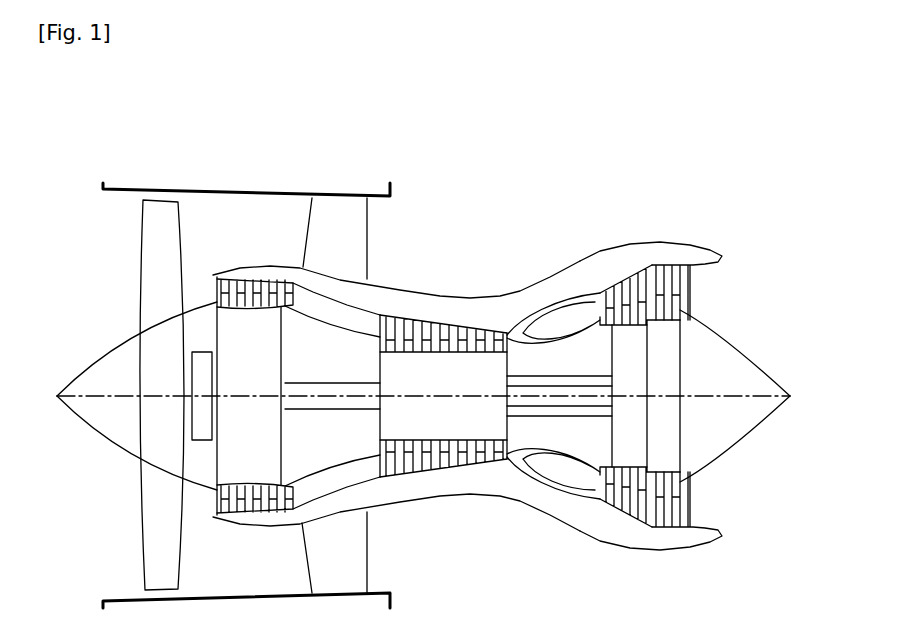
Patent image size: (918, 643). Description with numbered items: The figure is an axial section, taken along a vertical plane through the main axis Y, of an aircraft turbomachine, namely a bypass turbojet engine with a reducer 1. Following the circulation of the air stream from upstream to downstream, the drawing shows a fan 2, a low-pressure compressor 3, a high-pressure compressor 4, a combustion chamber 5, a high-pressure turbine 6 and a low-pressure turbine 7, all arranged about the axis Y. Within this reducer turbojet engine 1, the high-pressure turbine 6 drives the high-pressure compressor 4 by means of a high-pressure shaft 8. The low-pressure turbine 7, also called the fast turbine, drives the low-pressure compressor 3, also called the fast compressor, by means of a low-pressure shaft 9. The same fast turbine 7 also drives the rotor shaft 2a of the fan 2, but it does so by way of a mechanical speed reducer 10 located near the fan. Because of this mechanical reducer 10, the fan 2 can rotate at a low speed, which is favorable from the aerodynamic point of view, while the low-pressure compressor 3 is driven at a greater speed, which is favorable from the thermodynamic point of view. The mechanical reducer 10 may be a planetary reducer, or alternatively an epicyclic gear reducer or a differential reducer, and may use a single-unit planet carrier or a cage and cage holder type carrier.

The turbomachine with a reducer 1 is at (507, 168).
The fan 2 is at (158, 256).
The rotor shaft of the fan 2a is at (192, 411).
The low-pressure compressor 3 is at (250, 272).
The high-pressure compressor 4 is at (423, 318).
The combustion chamber 5 is at (553, 313).
The high-pressure turbine 6 is at (629, 278).
The low-pressure turbine 7 is at (664, 233).
The high-pressure shaft 8 is at (557, 376).
The low-pressure shaft 9 is at (320, 383).
The mechanical speed reducer 10 is at (194, 372).